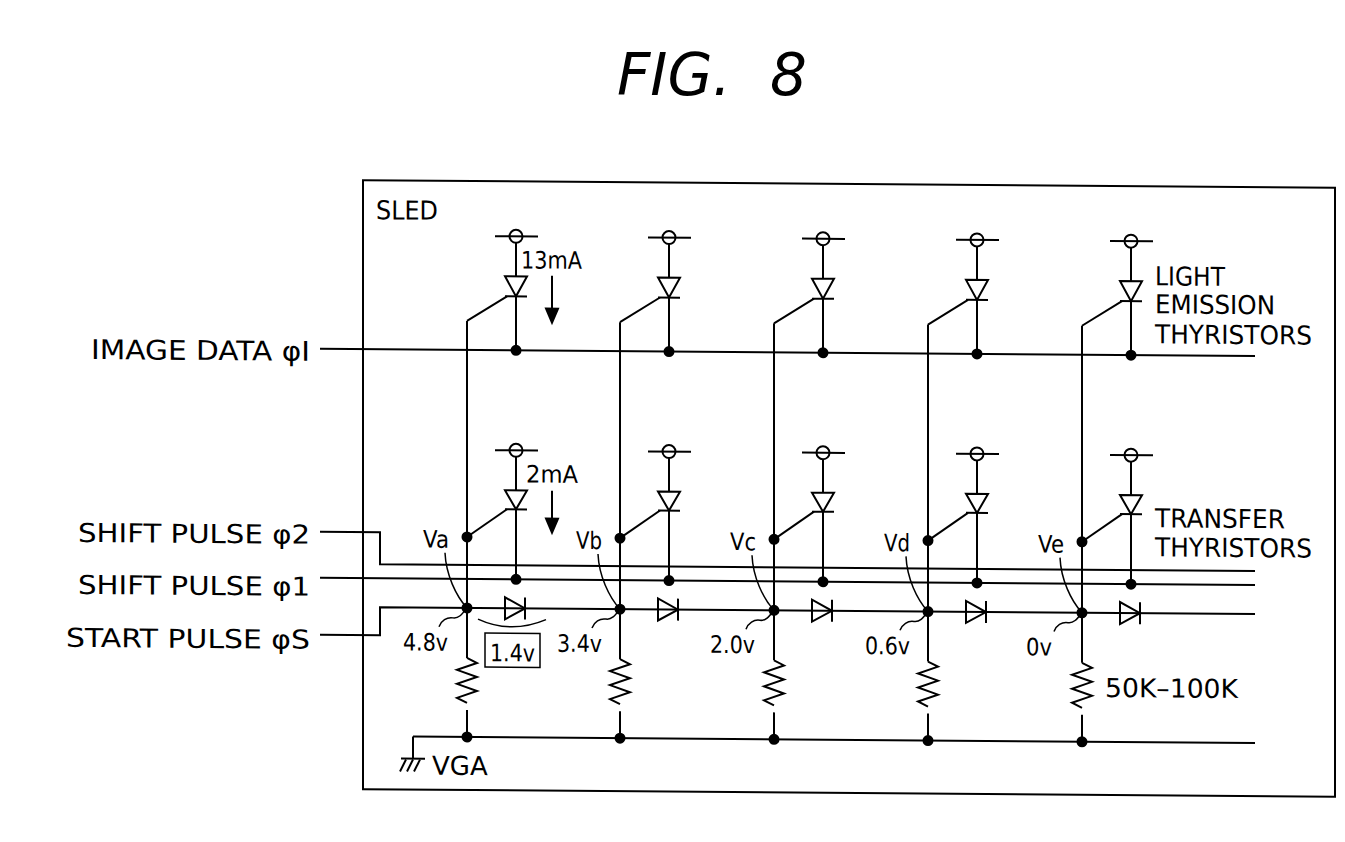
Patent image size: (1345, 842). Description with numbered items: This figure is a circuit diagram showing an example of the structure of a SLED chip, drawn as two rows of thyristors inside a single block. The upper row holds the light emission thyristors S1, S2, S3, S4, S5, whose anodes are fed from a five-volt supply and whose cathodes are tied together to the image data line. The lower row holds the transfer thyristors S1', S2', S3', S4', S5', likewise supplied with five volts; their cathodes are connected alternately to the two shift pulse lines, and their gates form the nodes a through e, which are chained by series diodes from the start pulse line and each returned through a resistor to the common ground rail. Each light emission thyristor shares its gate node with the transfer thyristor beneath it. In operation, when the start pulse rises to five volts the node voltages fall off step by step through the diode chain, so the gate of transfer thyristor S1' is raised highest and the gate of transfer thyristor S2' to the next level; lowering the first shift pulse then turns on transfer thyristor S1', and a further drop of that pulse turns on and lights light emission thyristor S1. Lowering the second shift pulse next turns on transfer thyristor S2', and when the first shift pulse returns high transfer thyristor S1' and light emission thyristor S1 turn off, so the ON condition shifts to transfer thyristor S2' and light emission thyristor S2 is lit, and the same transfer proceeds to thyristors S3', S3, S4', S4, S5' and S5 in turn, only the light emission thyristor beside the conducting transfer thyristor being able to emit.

The light emission thyristor S1 is at (494, 277).
The light emission thyristor S2 is at (647, 278).
The light emission thyristor S3 is at (801, 279).
The light emission thyristor S4 is at (955, 280).
The light emission thyristor S5 is at (1109, 282).
The transfer thyristor S1' is at (473, 499).
The transfer thyristor S2' is at (626, 501).
The transfer thyristor S3' is at (780, 502).
The transfer thyristor S4' is at (934, 503).
The transfer thyristor S5' is at (1088, 504).